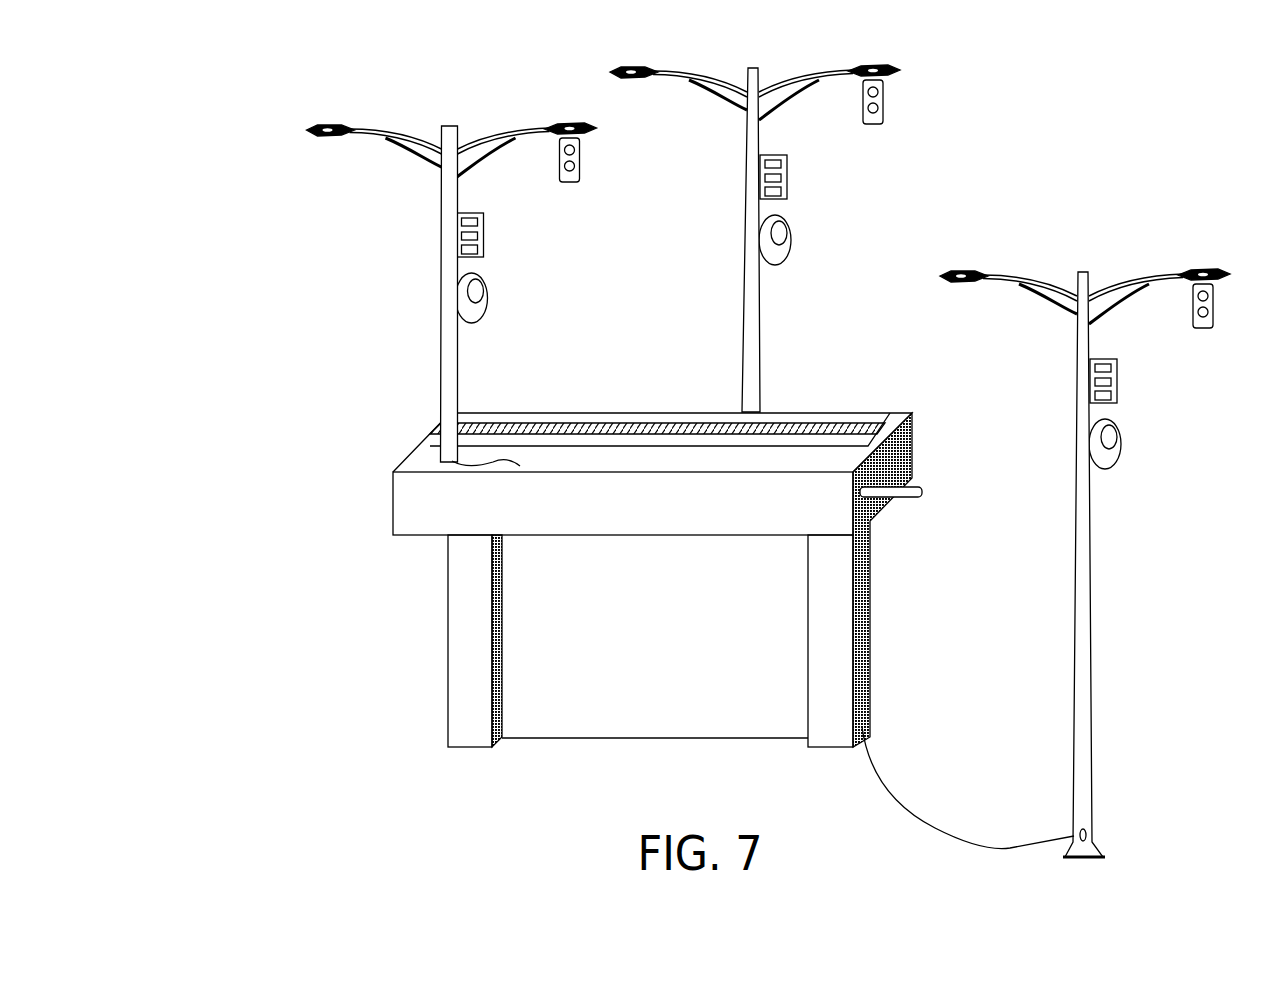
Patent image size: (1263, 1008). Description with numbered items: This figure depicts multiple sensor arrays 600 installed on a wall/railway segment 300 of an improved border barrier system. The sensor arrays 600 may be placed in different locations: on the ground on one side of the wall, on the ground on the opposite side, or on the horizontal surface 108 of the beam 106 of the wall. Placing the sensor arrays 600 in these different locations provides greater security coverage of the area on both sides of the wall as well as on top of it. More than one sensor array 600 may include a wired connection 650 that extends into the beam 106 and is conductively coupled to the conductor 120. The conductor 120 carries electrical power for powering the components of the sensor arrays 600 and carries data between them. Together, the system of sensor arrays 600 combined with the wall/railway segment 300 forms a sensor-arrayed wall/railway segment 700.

The sensor-arrayed wall/railway segment 700 is at (279, 190).
The sensor array 600 is at (769, 430).
The wall/railway segment 300 is at (425, 600).
The beam 106 is at (406, 448).
The horizontal surface 108 is at (760, 452).
The conductor 120 is at (905, 497).
The wired connection 650 is at (497, 463).